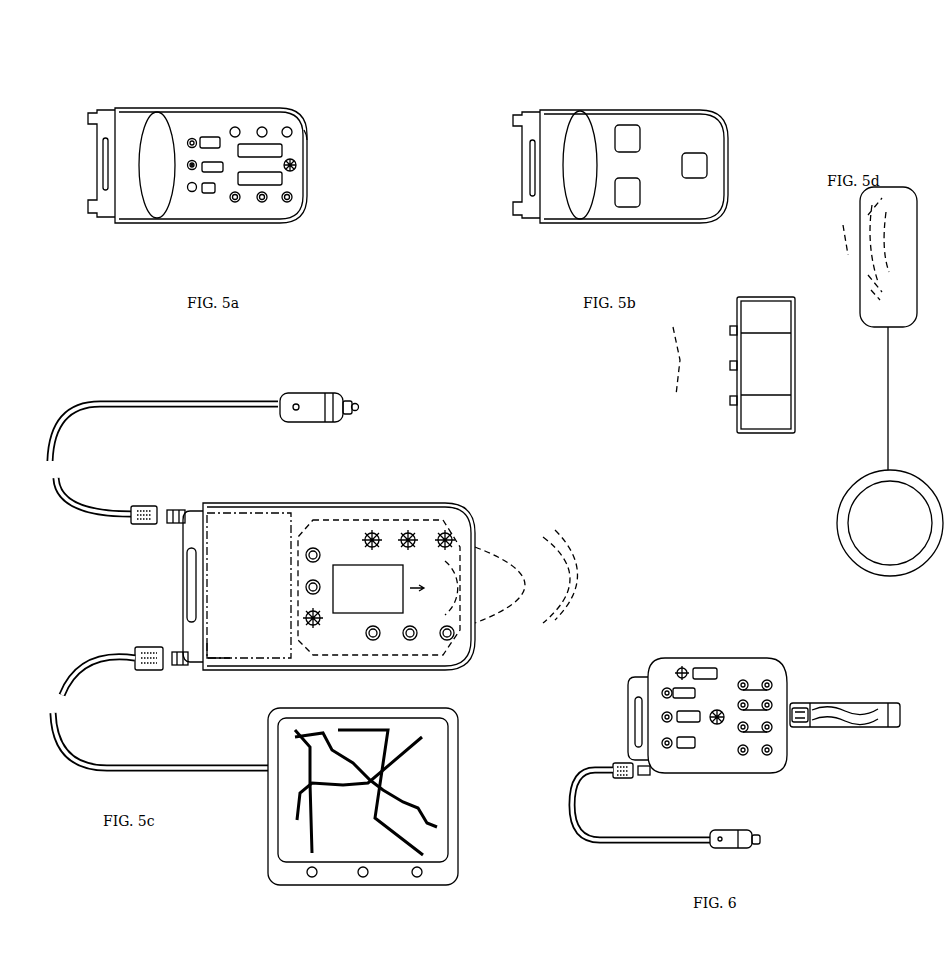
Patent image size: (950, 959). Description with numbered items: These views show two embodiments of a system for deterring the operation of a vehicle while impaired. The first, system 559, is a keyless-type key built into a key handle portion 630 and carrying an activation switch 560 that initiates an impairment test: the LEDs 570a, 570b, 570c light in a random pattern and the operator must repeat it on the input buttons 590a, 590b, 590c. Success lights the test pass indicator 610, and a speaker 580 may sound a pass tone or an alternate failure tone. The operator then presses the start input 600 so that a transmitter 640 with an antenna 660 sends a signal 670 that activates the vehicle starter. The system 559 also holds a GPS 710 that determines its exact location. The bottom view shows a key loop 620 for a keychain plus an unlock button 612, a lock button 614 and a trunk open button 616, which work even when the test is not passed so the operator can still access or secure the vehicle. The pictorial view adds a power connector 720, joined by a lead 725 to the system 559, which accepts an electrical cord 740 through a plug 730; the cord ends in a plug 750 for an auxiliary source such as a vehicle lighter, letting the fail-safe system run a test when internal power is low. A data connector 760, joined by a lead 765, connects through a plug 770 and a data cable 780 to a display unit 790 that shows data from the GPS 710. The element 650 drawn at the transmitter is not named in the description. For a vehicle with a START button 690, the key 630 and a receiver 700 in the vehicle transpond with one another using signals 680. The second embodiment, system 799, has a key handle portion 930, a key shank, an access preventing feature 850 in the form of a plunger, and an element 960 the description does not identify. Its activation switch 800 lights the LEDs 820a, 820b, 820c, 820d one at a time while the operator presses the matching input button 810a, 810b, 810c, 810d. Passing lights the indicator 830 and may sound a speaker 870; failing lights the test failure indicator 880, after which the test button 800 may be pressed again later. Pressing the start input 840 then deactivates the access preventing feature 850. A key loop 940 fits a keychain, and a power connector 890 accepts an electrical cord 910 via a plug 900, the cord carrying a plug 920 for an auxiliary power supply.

In FIG. 5a, the system for deterring the operation of a vehicle while impaired 559 is at (310, 167).
In FIG. 5a, the activation switch 560 is at (190, 137).
In FIG. 5a, the LED 570a is at (235, 128).
In FIG. 5a, the LED 570b is at (263, 128).
In FIG. 5a, the LED 570c is at (290, 128).
In FIG. 5a, the speaker 580 is at (302, 173).
In FIG. 5a, the input button 590a is at (235, 200).
In FIG. 5a, the input button 590b is at (263, 202).
In FIG. 5a, the input button 590c is at (288, 200).
In FIG. 5a, the start input 600 is at (197, 173).
In FIG. 5a, the test pass indicator 610 is at (192, 198).
In FIG. 5b, the unlock button 612 is at (630, 135).
In FIG. 5b, the lock button 614 is at (693, 162).
In FIG. 5b, the trunk open button 616 is at (628, 193).
In FIG. 5a, the key loop 620 is at (108, 180).
In FIG. 5b, the key loop 620 is at (533, 172).
In FIG. 5a, the key handle portion 630 is at (308, 142).
In FIG. 5b, the key handle portion 630 is at (683, 108).
In FIG. 5c, the transmitter 640 is at (390, 522).
In FIG. 5c, the engine start transmitter 650 is at (357, 563).
In FIG. 5d, the antenna 660 is at (873, 278).
In FIG. 5c, the antenna 660 is at (425, 583).
In FIG. 5c, the signal 670 is at (485, 578).
In FIG. 5b, the signals 680 is at (683, 343).
In FIG. 5c, the signals 680 is at (562, 583).
In FIG. 5d, the START button 690 is at (867, 530).
In FIG. 5d, the receiver in the vehicle 700 is at (888, 200).
In FIG. 5a, the global positioning system (GPS) 710 is at (138, 125).
In FIG. 5b, the global positioning system (GPS) 710 is at (557, 125).
In FIG. 5c, the global positioning system (GPS) 710 is at (220, 511).
In FIG. 5c, the power connector 720 is at (178, 504).
In FIG. 5c, the lead 725 is at (250, 561).
In FIG. 5c, the plug 730 is at (143, 532).
In FIG. 5c, the electrical cord 740 is at (139, 398).
In FIG. 5c, the plug 750 is at (310, 398).
In FIG. 5c, the data connector 760 is at (174, 645).
In FIG. 5c, the lead 765 is at (233, 652).
In FIG. 5c, the plug 770 is at (148, 673).
In FIG. 5c, the data cable 780 is at (72, 753).
In FIG. 5c, the display unit 790 is at (435, 790).
In FIG. 6, the system for deterring the operation of a vehicle while impaired 799 is at (760, 653).
In FIG. 6, the activation switch 800 is at (663, 685).
In FIG. 6, the input button 810a is at (767, 682).
In FIG. 6, the input button 810b is at (767, 705).
In FIG. 6, the input button 810c is at (770, 727).
In FIG. 6, the input button 810d is at (777, 758).
In FIG. 6, the LED 820a is at (743, 685).
In FIG. 6, the LED 820b is at (743, 705).
In FIG. 6, the LED 820c is at (743, 727).
In FIG. 6, the LED 820d is at (743, 750).
In FIG. 6, the indicator 830 is at (653, 740).
In FIG. 6, the start input 840 is at (662, 712).
In FIG. 6, the access preventing feature 850 is at (805, 728).
In FIG. 6, the speaker 870 is at (718, 732).
In FIG. 6, the test failure indicator 880 is at (680, 662).
In FIG. 6, the power connector 890 is at (650, 773).
In FIG. 6, the plug 900 is at (623, 777).
In FIG. 6, the electrical cord 910 is at (667, 843).
In FIG. 6, the plug 920 is at (737, 853).
In FIG. 6, the key handle portion 930 is at (773, 753).
In FIG. 6, the key loop 940 is at (640, 703).
In FIG. 6, the key 960 is at (862, 713).